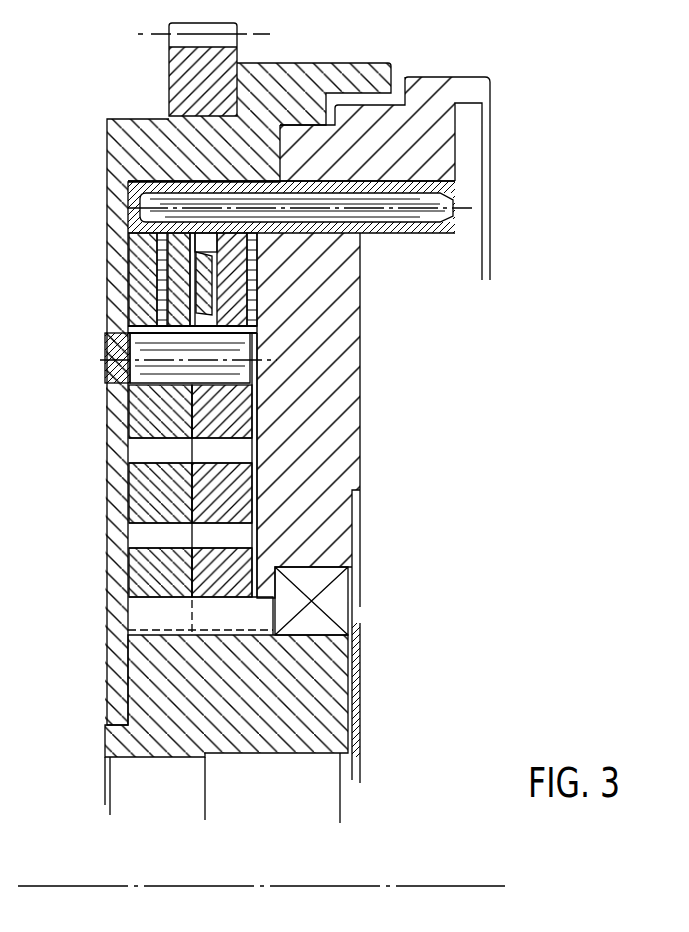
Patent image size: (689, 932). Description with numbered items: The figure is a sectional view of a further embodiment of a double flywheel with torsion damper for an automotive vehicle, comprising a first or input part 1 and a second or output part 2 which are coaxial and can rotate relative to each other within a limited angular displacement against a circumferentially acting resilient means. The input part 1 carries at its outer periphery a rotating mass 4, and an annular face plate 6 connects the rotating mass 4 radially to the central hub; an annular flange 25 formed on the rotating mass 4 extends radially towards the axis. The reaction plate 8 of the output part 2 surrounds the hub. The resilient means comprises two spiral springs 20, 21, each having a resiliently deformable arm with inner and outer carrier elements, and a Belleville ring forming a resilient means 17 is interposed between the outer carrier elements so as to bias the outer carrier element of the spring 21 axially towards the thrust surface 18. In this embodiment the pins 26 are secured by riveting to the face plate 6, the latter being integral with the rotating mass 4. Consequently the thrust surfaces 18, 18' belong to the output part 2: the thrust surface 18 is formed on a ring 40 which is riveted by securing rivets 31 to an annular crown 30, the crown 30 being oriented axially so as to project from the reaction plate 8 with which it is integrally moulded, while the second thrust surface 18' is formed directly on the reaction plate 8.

The input part 1 is at (106, 166).
The output part 2 is at (367, 453).
The rotating mass 4 is at (304, 63).
The annular face plate 6 is at (105, 663).
The reaction plate 8 is at (360, 378).
The resilient means 17 is at (232, 286).
The thrust surface 18 is at (89, 279).
The second thrust surface 18' is at (338, 290).
The spiral spring 20 is at (167, 496).
The spiral spring 21 is at (205, 493).
The annular flange 25 is at (128, 233).
The pins 26 is at (118, 365).
The annular crown 30 is at (160, 178).
The securing rivets 31 is at (455, 182).
The ring 40 is at (152, 302).